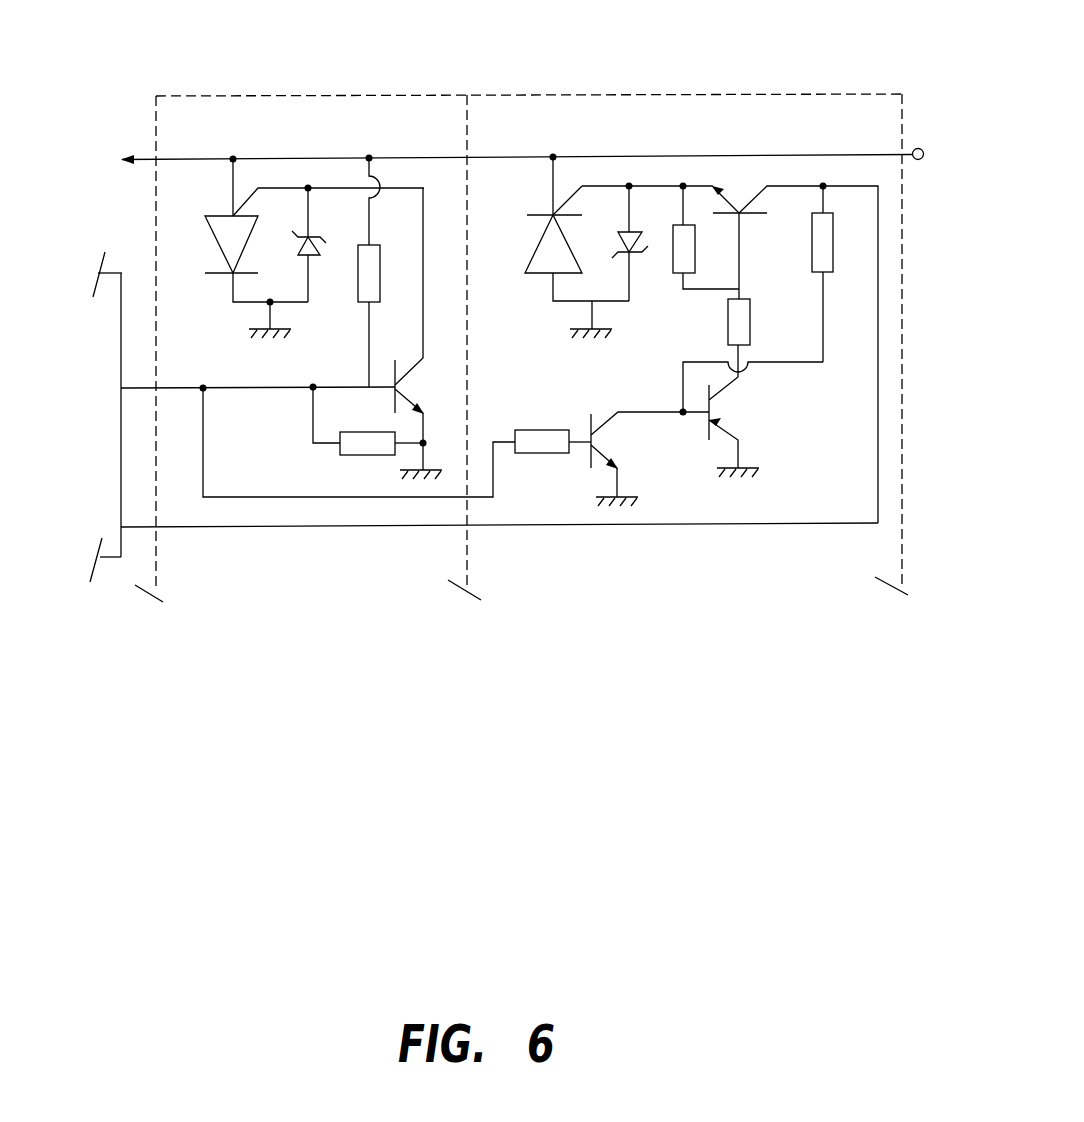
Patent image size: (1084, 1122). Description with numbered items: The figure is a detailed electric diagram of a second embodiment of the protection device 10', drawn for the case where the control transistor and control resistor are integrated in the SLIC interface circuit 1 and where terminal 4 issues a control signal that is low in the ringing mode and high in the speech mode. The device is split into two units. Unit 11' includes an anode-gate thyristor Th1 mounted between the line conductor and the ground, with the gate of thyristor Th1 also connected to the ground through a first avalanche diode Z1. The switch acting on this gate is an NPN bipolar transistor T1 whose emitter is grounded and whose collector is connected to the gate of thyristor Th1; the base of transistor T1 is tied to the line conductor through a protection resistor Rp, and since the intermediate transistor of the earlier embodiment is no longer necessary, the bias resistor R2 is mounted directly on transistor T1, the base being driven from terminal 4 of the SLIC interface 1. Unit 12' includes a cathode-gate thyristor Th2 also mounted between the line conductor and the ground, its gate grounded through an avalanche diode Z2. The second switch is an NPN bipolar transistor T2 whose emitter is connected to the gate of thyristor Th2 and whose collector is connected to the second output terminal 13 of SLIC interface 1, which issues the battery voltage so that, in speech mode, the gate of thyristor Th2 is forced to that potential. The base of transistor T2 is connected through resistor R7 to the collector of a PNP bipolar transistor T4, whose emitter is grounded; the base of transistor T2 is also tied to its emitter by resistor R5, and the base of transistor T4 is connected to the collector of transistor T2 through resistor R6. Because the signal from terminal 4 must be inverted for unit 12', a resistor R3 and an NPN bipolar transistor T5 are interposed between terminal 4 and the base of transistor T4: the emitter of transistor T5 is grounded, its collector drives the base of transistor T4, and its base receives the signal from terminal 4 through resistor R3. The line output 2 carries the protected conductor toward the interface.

The protection device 10' is at (529, 299).
The unit 11' is at (308, 575).
The unit 12' is at (775, 575).
The SLIC interface circuit 1 is at (113, 273).
The line output 2 is at (505, 160).
The terminal 4 is at (132, 387).
The second output terminal 13 is at (137, 523).
The SLIC interface circuit SLIC is at (89, 415).
The anode-gate thyristor Th1 is at (297, 248).
The first avalanche diode Z1 is at (293, 245).
The protection resistor Rp is at (386, 272).
The NPN bipolar transistor T1 is at (419, 333).
The resistor R2 is at (368, 421).
The resistor R3 is at (553, 428).
The NPN bipolar transistor T5 is at (650, 458).
The PNP bipolar transistor T4 is at (753, 411).
The resistor R7 is at (756, 317).
The resistor R5 is at (706, 236).
The resistor R6 is at (840, 273).
The NPN bipolar transistor T2 is at (795, 348).
The cathode-gate thyristor Th2 is at (561, 247).
The avalanche diode Z2 is at (617, 242).